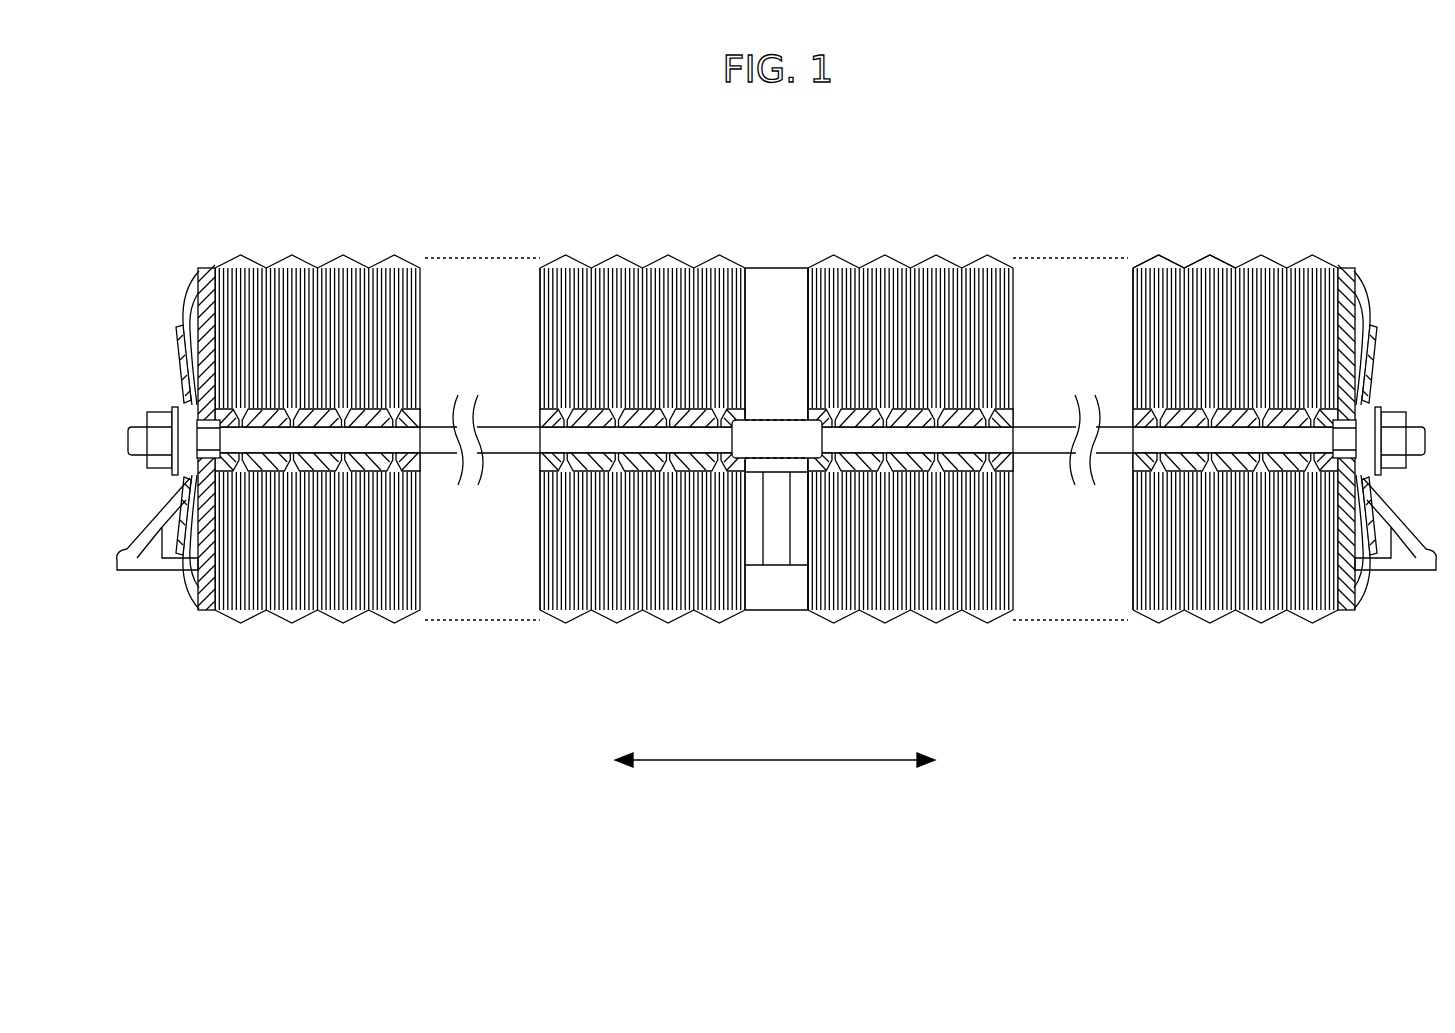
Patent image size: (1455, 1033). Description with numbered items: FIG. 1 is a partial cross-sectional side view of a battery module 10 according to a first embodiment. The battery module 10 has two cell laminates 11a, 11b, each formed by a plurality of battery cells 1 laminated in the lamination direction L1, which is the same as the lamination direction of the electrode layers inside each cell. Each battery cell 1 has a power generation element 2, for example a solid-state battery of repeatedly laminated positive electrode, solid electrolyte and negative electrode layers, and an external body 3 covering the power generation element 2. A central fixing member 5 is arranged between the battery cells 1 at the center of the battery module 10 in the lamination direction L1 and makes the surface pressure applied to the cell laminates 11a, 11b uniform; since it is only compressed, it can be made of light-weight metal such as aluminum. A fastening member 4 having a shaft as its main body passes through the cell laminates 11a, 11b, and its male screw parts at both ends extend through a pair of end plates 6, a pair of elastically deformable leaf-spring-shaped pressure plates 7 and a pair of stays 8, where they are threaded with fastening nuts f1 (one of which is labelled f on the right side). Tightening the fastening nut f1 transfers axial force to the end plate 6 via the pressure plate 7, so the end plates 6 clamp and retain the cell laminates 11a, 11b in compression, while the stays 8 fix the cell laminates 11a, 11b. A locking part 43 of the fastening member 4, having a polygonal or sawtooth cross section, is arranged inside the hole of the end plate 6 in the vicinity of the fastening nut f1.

The battery cell 1 is at (1235, 383).
The power generation element 2 is at (1199, 272).
The external body 3 is at (1177, 174).
The fastening member 4 is at (510, 440).
The center fixing member 5 is at (776, 268).
The end plate 6 is at (186, 300).
The pressure plate 7 is at (176, 345).
The stay 8 is at (152, 540).
The battery module 10 is at (1333, 160).
The cell laminate 11a is at (747, 648).
The cell laminate 11b is at (1074, 423).
The locking part 43 is at (210, 458).
The fastening nut f1 is at (156, 418).
The fastener f is at (1397, 418).
The lamination direction L1 is at (782, 763).